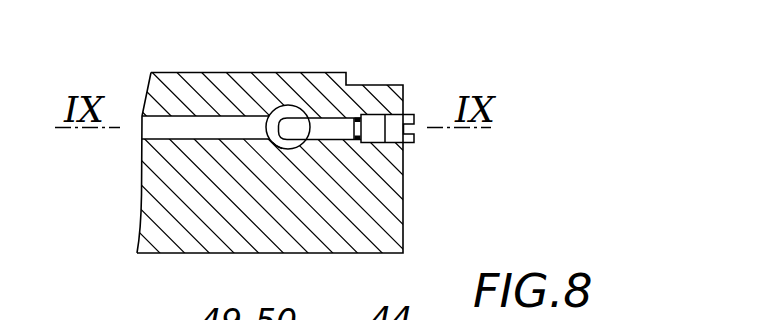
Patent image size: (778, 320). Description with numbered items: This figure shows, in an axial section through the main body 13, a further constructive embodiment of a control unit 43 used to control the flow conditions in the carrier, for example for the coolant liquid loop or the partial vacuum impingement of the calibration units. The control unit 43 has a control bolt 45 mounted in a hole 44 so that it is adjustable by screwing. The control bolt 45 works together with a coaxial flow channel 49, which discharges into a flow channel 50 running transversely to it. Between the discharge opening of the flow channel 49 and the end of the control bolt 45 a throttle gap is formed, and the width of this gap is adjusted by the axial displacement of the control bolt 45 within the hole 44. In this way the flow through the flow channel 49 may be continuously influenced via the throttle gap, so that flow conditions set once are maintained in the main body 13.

The main body 13 is at (169, 207).
The flow channel 49 is at (183, 127).
The control unit 43 is at (284, 104).
The control bolt 45 is at (332, 127).
The hole 44 is at (317, 140).
The flow channel 50 is at (277, 142).